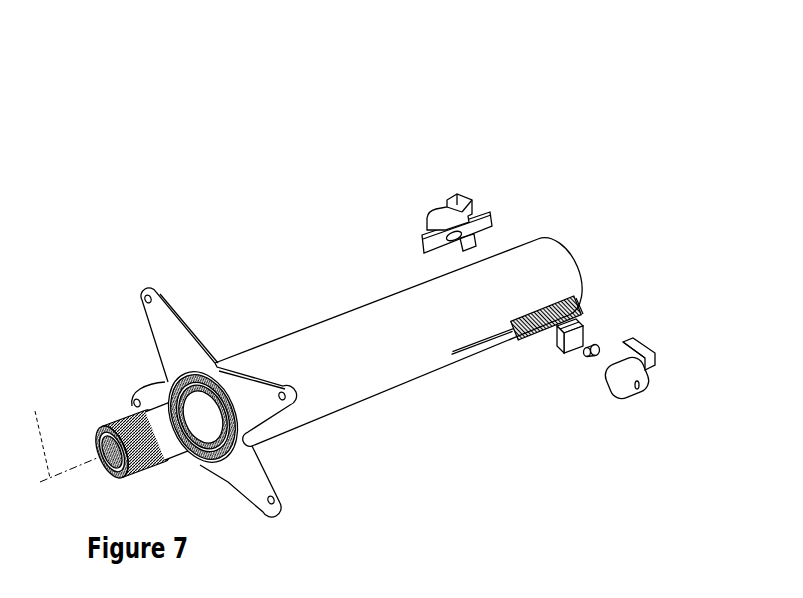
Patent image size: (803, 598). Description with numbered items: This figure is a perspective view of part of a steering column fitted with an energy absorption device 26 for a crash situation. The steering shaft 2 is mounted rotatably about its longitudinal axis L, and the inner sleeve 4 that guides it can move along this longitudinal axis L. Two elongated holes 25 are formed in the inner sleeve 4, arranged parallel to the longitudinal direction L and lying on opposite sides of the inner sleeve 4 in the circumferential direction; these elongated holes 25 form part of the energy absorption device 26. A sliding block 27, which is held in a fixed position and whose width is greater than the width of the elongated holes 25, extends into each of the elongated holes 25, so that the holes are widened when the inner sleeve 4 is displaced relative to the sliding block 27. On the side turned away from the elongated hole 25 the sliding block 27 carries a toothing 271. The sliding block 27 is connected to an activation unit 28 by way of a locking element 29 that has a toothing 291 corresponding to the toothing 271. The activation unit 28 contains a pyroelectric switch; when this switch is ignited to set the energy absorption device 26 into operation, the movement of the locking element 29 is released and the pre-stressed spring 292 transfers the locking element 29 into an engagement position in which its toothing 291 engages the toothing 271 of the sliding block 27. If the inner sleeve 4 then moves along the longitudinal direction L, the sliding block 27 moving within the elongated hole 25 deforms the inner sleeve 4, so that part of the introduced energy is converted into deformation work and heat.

The steering shaft 2 is at (173, 447).
The inner sleeve 4 is at (317, 397).
The elongated holes 25 is at (472, 348).
The energy absorption device 26 is at (643, 366).
The sliding block 27 is at (467, 233).
The toothing 271 is at (583, 300).
The activation unit 28 is at (437, 210).
The locking element 29 is at (645, 302).
The toothing 291 is at (582, 315).
The pre-stressed spring 292 is at (600, 347).
The longitudinal axis L is at (63, 436).